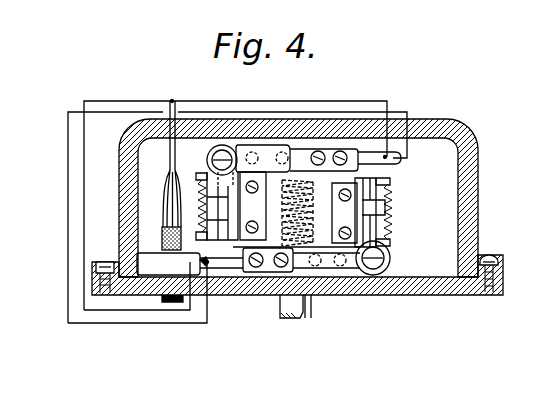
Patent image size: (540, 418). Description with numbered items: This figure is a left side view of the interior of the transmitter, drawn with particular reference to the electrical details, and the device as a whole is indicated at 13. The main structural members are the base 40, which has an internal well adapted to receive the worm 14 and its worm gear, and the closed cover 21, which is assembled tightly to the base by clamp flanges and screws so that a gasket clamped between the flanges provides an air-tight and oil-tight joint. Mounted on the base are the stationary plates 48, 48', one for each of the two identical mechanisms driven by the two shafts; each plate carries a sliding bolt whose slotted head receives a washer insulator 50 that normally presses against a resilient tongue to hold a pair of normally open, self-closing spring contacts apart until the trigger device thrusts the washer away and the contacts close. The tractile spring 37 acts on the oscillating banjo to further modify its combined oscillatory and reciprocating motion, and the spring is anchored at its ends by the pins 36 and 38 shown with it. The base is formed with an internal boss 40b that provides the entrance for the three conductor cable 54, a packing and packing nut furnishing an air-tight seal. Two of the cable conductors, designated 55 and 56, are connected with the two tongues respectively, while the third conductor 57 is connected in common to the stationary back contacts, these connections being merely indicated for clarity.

The switch device 13 is at (305, 206).
The worm 14 is at (308, 316).
The closed cover 21 is at (431, 121).
The upper spring pin 36 is at (391, 181).
The tractile spring 37 is at (389, 212).
The lower spring pin 38 is at (391, 243).
The base 40 is at (371, 292).
The internal boss 40b is at (172, 271).
The stationary plate 48 is at (344, 213).
The stationary plate 48' is at (231, 206).
The washer insulator 50 is at (391, 259).
The three conductor cable 54 is at (162, 238).
The cable conductor 55 is at (68, 177).
The cable conductor 56 is at (284, 99).
The third conductor 57 is at (189, 100).